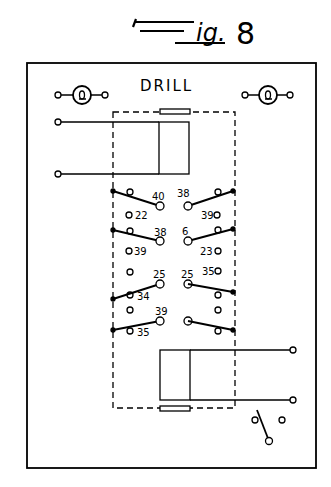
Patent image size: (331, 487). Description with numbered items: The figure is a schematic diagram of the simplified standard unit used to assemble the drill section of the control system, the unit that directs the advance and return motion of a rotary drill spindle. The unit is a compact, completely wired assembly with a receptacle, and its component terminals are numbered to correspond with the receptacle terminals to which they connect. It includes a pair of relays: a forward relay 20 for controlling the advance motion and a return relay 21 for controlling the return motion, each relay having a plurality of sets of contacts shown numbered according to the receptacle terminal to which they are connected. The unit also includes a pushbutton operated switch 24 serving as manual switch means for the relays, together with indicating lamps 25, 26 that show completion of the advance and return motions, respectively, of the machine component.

The forward relay 20 is at (189, 151).
The return relay 21 is at (190, 377).
The pushbutton operated switch 24 is at (251, 437).
The indicating lamp 25 is at (88, 73).
The indicating lamp 26 is at (285, 73).